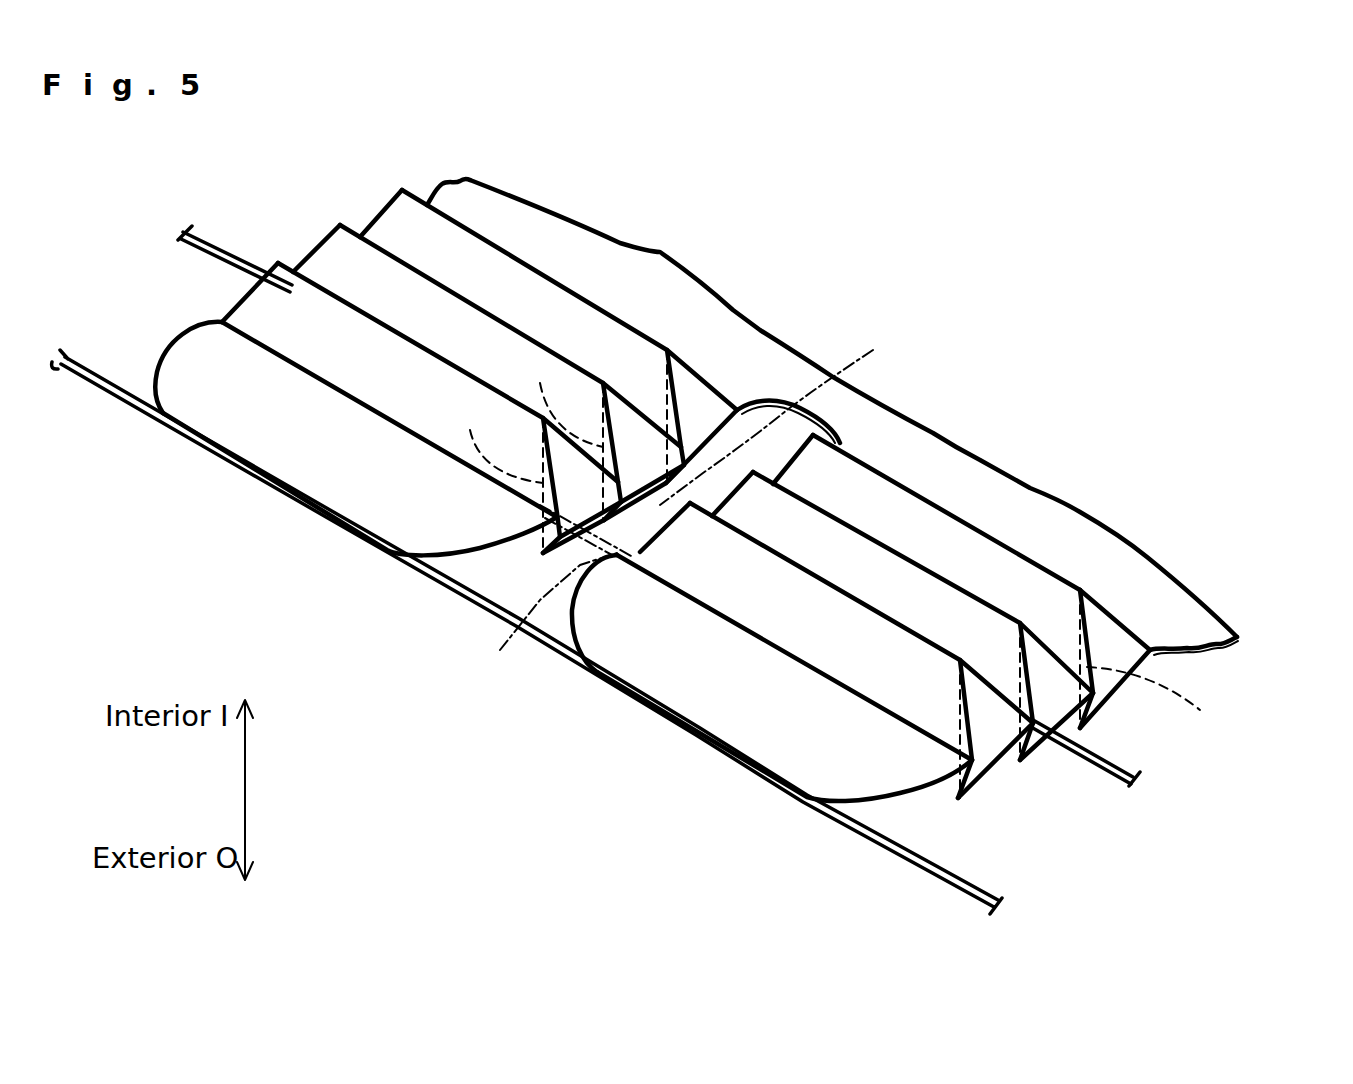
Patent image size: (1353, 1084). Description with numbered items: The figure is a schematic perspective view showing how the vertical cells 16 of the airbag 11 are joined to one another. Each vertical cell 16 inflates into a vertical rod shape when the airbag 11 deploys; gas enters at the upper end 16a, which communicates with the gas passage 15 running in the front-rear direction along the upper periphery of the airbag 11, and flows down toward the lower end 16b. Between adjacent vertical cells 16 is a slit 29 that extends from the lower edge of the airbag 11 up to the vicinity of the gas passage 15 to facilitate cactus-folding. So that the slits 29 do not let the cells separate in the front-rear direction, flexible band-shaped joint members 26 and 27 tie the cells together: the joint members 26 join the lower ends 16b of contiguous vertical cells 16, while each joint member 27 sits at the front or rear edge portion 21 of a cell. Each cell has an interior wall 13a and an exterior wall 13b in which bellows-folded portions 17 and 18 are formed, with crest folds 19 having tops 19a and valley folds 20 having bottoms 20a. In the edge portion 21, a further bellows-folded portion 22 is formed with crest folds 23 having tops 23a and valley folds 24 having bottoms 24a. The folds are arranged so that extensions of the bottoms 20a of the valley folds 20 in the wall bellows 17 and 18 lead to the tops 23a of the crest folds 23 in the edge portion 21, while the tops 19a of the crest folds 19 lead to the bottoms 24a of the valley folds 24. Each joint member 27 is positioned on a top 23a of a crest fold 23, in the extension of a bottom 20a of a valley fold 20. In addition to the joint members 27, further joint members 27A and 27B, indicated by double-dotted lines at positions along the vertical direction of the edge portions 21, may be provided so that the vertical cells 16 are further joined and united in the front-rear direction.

The airbag 11 is at (983, 283).
The interior wall 13a is at (330, 263).
The exterior wall 13b is at (565, 562).
The gas passage 15 is at (737, 352).
The vertical cell 16 is at (260, 553).
The upper end of cell 16a is at (570, 280).
The lower end of cell 16b is at (228, 442).
The bellows-folded portion 17 is at (543, 243).
The bellows-folded portion 18 is at (548, 548).
The crest fold 19 is at (407, 227).
The top of crest fold 19a is at (375, 247).
The valley fold 20 is at (857, 683).
The bottom of valley fold 20a is at (277, 350).
The edge portion 21 is at (416, 173).
The bellows-folded portion 22 is at (1000, 860).
The crest fold 23 is at (653, 530).
The top of crest fold 23a is at (723, 372).
The valley fold 24 is at (1177, 765).
The bottom of valley fold 24a is at (818, 550).
The joint member 26 is at (95, 372).
The joint member 27 is at (222, 247).
The joint member 27A is at (536, 592).
The joint member 27B is at (797, 414).
The slit 29 is at (128, 385).